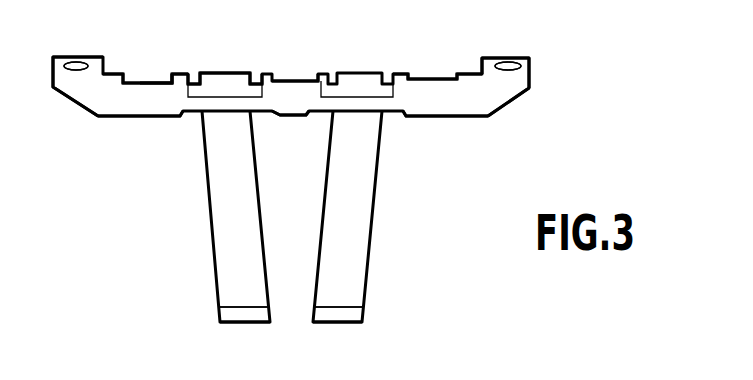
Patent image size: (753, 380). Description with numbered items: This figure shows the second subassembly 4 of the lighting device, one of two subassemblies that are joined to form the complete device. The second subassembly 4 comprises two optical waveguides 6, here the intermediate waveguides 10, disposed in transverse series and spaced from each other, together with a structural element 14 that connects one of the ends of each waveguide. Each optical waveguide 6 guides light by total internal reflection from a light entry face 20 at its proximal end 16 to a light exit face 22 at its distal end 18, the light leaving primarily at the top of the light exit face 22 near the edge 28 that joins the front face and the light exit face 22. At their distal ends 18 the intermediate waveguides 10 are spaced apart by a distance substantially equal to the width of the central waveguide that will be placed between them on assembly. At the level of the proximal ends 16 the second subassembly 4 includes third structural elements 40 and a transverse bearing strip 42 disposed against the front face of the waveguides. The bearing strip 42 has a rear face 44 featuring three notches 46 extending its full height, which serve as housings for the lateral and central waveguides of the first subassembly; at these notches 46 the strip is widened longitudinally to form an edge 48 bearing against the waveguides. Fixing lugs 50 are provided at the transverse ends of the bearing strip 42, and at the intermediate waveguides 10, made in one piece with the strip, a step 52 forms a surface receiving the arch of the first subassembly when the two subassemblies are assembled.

The second subassembly 4 is at (163, 202).
The optical waveguide 6 is at (268, 267).
The intermediate waveguide 10 is at (360, 215).
The structural element 14 is at (470, 66).
The proximal end 16 is at (92, 125).
The distal end 18 is at (372, 315).
The light entry face 20 is at (242, 72).
The light exit face 22 is at (247, 317).
The edge 28 is at (342, 303).
The third structural element 40 is at (422, 70).
The bearing strip 42 is at (430, 105).
The rear face 44 is at (137, 72).
The notch 46 is at (158, 80).
The edge 48 is at (135, 117).
The fixing lug 50 is at (507, 95).
The step 52 is at (218, 85).